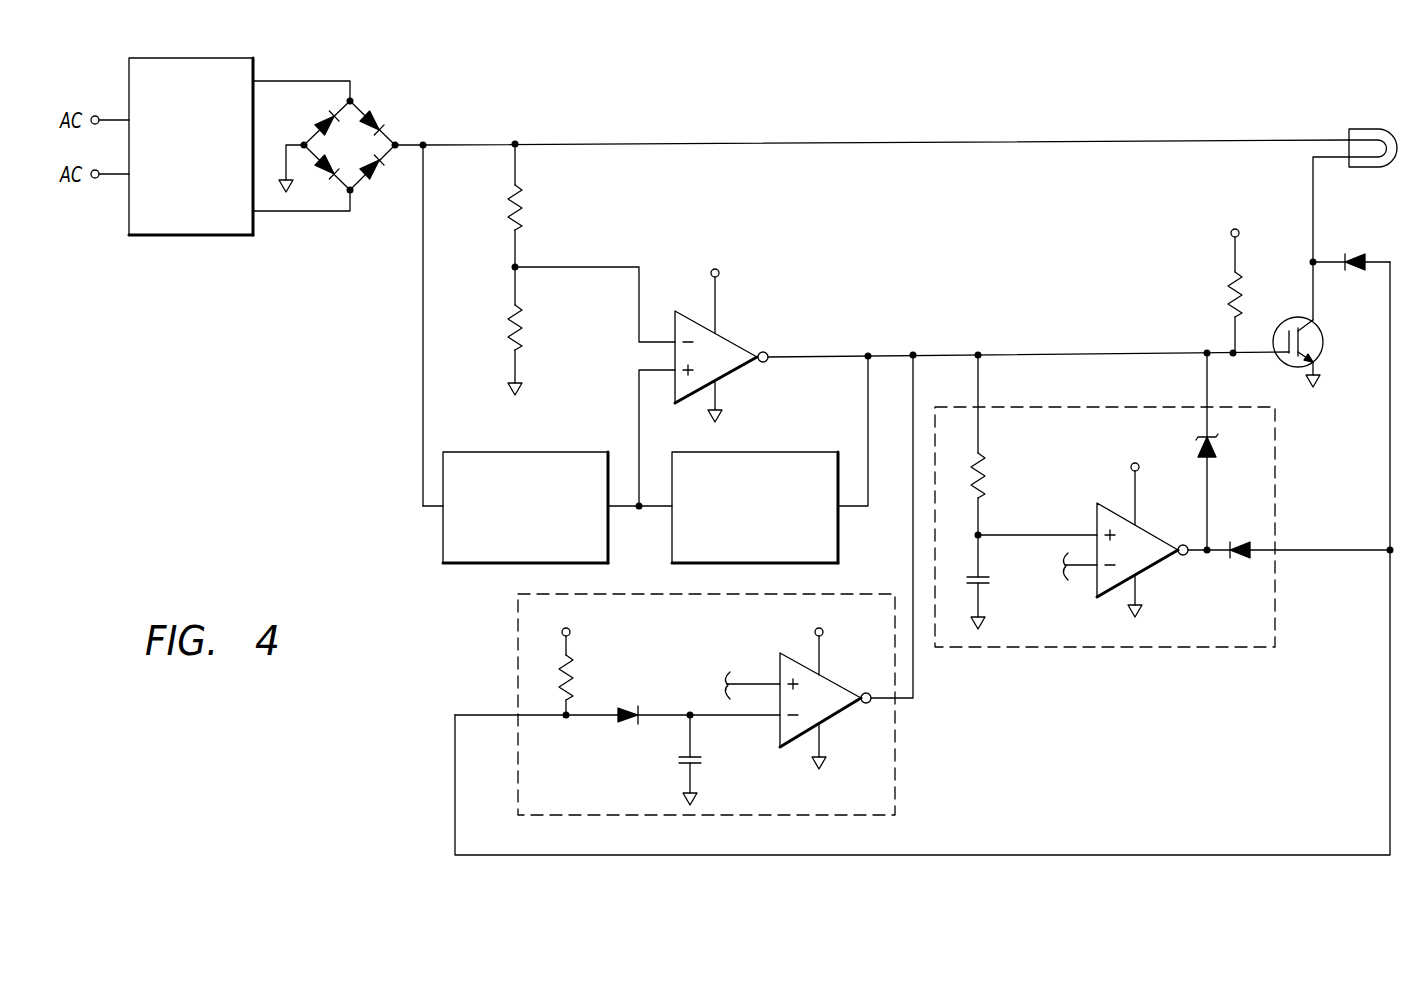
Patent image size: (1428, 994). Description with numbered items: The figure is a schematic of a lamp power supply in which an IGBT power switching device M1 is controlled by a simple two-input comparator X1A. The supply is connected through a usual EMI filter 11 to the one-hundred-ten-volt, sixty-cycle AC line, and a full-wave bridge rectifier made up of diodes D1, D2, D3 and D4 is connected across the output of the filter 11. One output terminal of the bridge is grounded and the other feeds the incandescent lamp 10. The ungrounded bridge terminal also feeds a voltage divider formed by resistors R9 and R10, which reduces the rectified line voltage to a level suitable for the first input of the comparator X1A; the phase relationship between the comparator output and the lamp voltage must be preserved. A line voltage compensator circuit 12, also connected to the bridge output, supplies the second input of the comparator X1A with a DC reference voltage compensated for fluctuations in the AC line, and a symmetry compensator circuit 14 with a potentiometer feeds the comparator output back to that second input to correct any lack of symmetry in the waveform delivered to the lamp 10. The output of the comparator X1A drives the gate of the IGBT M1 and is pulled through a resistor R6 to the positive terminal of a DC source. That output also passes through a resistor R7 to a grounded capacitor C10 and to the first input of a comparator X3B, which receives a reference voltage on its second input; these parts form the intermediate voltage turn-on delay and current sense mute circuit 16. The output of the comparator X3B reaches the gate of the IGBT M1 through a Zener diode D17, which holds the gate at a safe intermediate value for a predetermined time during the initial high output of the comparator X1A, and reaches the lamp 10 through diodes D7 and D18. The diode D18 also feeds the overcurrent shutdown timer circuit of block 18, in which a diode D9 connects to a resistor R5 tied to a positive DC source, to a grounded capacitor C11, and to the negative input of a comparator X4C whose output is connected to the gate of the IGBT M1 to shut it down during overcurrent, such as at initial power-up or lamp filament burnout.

The incandescent lamp 10 is at (1394, 130).
The EMI filter 11 is at (190, 58).
The line voltage compensator circuit 12 is at (562, 452).
The symmetry compensator circuit 14 is at (790, 452).
The intermediate voltage turn-on delay and current sense mute circuit 16 is at (1276, 618).
The overcurrent shutdown timer circuit 18 is at (896, 772).
The bridge rectifier diode D1 is at (326, 114).
The bridge rectifier diode D2 is at (327, 165).
The bridge rectifier diode D3 is at (372, 115).
The bridge rectifier diode D4 is at (378, 160).
The diode D7 is at (1352, 248).
The diode D9 is at (627, 730).
The Zener diode D17 is at (1217, 447).
The diode D18 is at (1237, 533).
The resistor R5 is at (572, 662).
The resistor R6 is at (1243, 287).
The resistor R7 is at (984, 477).
The resistor R9 is at (522, 205).
The resistor R10 is at (522, 322).
The capacitor C10 is at (990, 580).
The capacitor C11 is at (703, 762).
The comparator X1A is at (735, 341).
The comparator X3B is at (1150, 536).
The comparator X4C is at (845, 684).
The IGBT power switching device M1 is at (1315, 332).